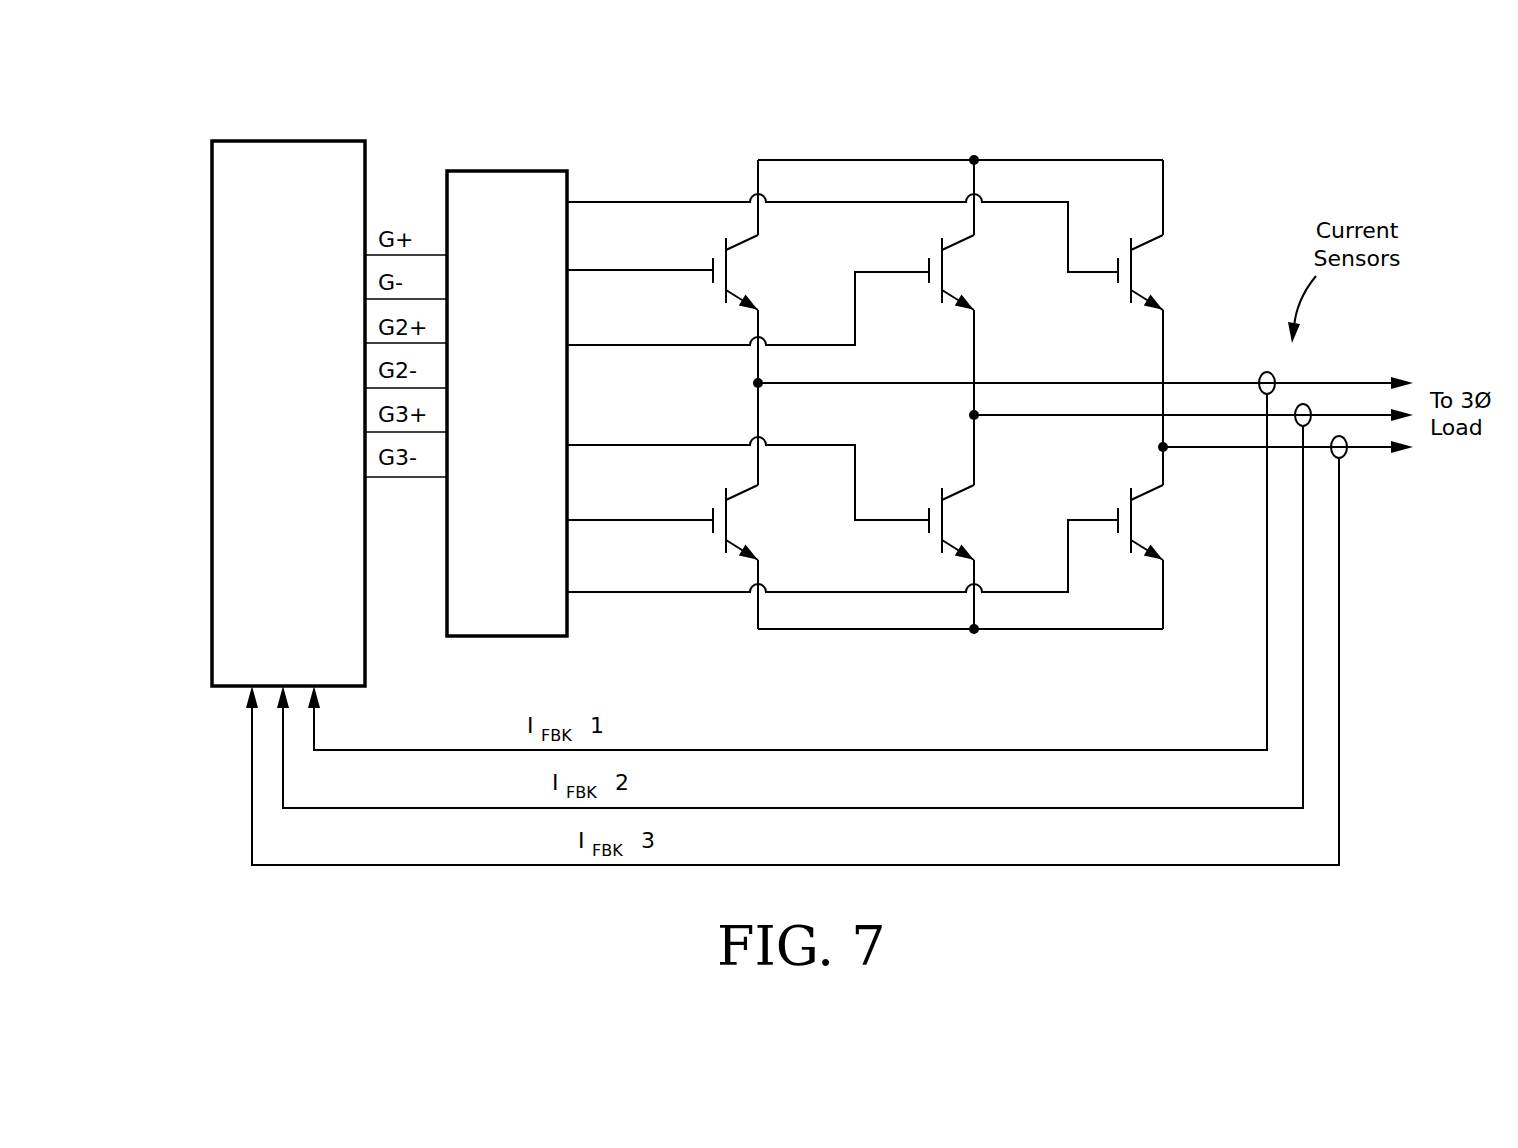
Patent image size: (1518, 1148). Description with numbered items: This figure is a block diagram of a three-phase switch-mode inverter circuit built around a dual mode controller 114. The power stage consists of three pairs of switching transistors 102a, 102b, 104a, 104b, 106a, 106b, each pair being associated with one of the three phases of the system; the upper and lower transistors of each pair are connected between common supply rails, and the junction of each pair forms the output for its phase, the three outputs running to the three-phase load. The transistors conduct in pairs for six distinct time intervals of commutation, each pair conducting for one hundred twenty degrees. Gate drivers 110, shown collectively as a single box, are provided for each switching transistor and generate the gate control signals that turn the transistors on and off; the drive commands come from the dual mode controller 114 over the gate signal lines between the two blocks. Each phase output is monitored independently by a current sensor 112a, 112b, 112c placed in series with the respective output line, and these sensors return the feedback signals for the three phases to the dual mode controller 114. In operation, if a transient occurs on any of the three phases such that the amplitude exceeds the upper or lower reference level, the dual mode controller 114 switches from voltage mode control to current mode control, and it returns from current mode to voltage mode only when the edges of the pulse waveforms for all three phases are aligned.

The gate drivers 110 is at (510, 171).
The dual mode controller 114 is at (212, 300).
The switching transistor 102a is at (744, 254).
The switching transistor 102b is at (744, 504).
The switching transistor 104a is at (960, 254).
The switching transistor 104b is at (960, 504).
The switching transistor 106a is at (1149, 254).
The switching transistor 106b is at (1149, 504).
The current sensor 112a is at (1267, 372).
The current sensor 112b is at (1303, 404).
The current sensor 112c is at (1339, 458).